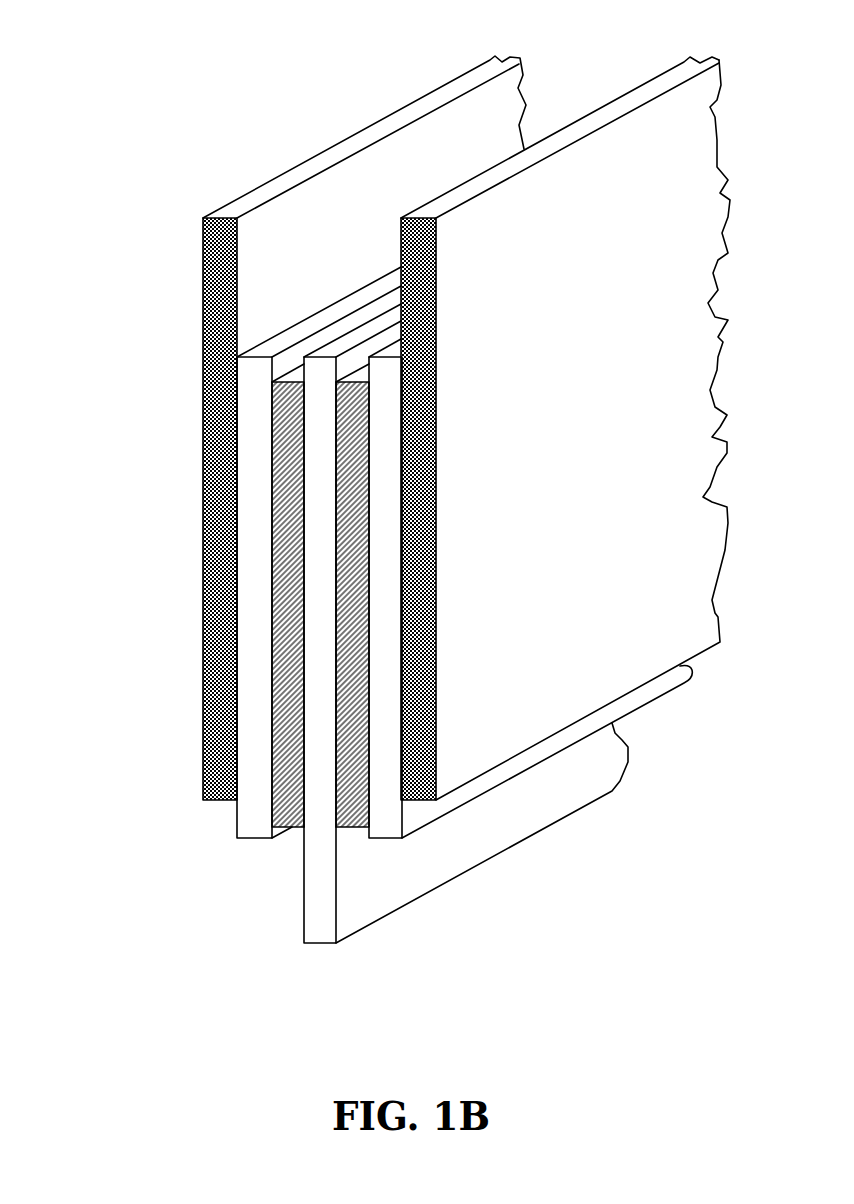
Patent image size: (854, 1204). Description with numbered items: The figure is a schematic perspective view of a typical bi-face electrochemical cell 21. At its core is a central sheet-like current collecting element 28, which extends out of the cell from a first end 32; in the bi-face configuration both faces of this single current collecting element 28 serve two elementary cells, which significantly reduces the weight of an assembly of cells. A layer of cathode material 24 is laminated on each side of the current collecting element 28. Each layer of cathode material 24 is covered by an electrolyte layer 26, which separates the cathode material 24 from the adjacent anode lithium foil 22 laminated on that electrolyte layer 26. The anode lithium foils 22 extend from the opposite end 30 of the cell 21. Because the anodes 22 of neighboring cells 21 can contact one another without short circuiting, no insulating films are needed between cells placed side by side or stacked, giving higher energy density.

The bi-face electrochemical cell 21 is at (149, 57).
The anode lithium foil 22 is at (417, 280).
The cathode material 24 is at (352, 510).
The electrolyte layer 26 is at (382, 450).
The current collecting element 28 is at (318, 573).
The opposite end 30 is at (445, 57).
The first end 32 is at (324, 973).